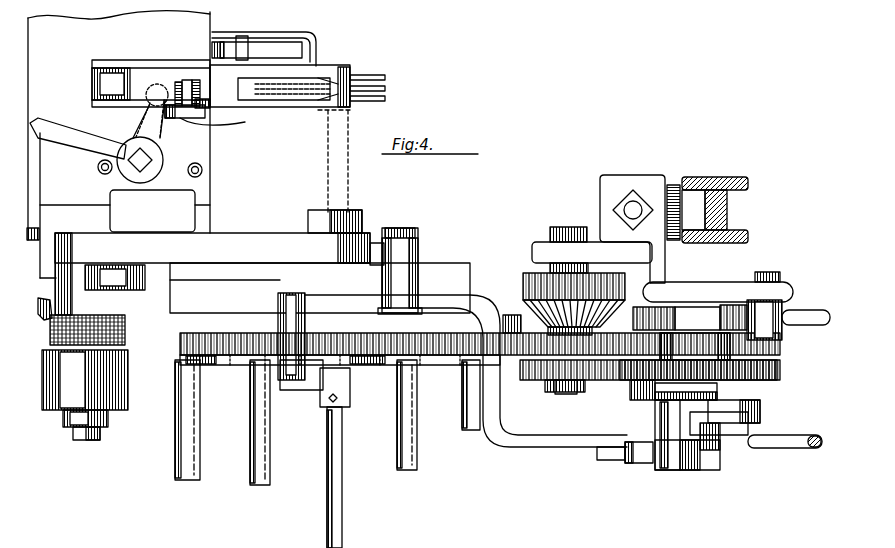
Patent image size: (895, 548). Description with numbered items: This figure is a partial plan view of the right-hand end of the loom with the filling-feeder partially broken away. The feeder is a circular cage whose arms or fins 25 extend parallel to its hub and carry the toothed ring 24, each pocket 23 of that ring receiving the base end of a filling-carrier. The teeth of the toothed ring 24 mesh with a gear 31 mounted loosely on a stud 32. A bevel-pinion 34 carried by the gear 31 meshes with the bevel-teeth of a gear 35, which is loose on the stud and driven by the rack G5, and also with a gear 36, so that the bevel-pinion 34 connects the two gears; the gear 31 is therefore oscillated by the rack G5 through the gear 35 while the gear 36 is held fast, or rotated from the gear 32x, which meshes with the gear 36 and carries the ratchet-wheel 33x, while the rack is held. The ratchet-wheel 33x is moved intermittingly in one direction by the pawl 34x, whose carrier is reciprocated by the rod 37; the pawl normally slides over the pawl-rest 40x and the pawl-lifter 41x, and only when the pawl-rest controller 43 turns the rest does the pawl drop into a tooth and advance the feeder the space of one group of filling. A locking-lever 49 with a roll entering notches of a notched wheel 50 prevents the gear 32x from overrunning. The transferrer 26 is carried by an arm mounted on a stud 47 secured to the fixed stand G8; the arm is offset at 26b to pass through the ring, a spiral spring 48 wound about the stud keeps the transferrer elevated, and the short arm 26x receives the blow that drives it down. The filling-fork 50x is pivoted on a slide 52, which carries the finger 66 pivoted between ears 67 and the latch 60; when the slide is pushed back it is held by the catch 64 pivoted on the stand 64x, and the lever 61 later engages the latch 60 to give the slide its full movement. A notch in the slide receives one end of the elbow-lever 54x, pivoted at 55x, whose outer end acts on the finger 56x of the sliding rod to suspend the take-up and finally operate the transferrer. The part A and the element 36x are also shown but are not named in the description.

The pocket 23 is at (226, 358).
The toothed ring 24 is at (182, 345).
The arms or fins 25 is at (176, 405).
The transferrer 26 is at (338, 500).
The offset 26b is at (300, 322).
The short arm 26x is at (42, 314).
The gear 31 is at (598, 342).
The stud 32 is at (552, 393).
The gear 32x is at (778, 372).
The ratchet-wheel 33x is at (635, 400).
The bevel-pinion 34 is at (530, 312).
The pawl 34x is at (656, 422).
The gear 35 is at (533, 275).
The gear 36 is at (526, 372).
The clutch collar 36x is at (742, 412).
The rod 37 is at (800, 436).
The pawl-rest 40x is at (642, 462).
The pawl-lifter 41x is at (690, 462).
The pawl-rest controller 43 is at (483, 447).
The stud 47 is at (72, 435).
The spiral spring 48 is at (110, 330).
The locking-lever 49 is at (803, 316).
The notched wheel 50 is at (640, 332).
The filling-fork 50x is at (386, 87).
The slide 52 is at (332, 71).
The elbow-lever 54x is at (58, 128).
The pivot 55x is at (150, 160).
The finger 56x is at (33, 184).
The latch 60 is at (262, 46).
The lever 61 is at (242, 40).
The catch 64 is at (206, 112).
The stand 64x is at (230, 125).
The finger 66 is at (185, 88).
The ears 67 is at (177, 90).
The frame bracket A is at (674, 229).
The stand G8 is at (240, 240).
The rack G5 is at (622, 290).